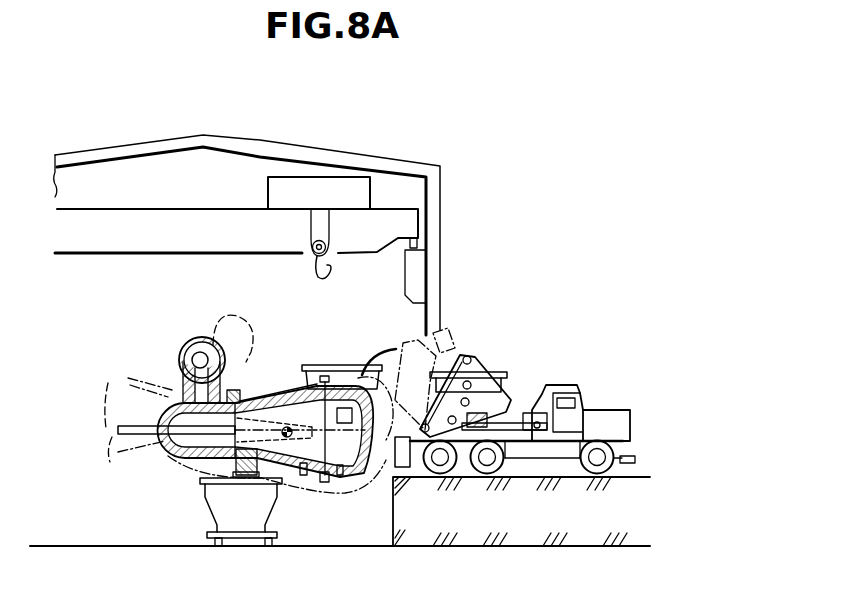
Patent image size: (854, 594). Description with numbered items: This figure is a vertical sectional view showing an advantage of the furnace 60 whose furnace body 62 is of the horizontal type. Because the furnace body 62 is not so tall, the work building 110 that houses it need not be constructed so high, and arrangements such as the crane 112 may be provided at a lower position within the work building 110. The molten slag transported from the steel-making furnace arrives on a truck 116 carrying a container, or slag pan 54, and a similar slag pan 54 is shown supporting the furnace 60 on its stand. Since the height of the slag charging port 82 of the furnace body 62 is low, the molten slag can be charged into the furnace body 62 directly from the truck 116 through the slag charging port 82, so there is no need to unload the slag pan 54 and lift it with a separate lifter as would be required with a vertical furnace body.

The container (slag pan) 54 is at (228, 510).
The furnace 60 is at (168, 350).
The furnace body 62 is at (289, 388).
The slag charging port 82 is at (358, 377).
The work building 110 is at (390, 136).
The crane 112 is at (392, 190).
The truck 116 is at (557, 368).